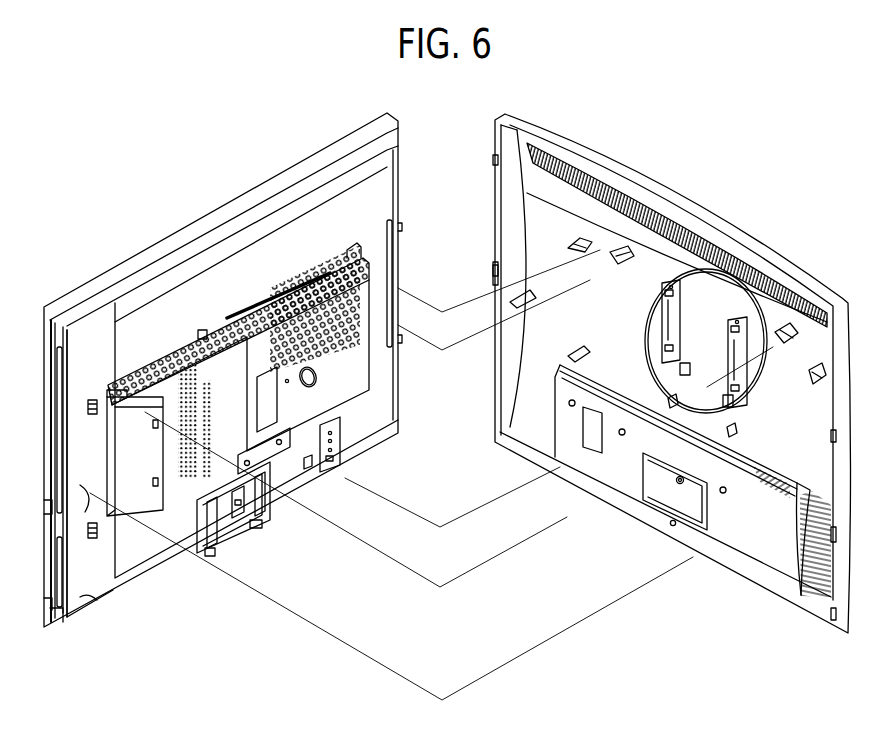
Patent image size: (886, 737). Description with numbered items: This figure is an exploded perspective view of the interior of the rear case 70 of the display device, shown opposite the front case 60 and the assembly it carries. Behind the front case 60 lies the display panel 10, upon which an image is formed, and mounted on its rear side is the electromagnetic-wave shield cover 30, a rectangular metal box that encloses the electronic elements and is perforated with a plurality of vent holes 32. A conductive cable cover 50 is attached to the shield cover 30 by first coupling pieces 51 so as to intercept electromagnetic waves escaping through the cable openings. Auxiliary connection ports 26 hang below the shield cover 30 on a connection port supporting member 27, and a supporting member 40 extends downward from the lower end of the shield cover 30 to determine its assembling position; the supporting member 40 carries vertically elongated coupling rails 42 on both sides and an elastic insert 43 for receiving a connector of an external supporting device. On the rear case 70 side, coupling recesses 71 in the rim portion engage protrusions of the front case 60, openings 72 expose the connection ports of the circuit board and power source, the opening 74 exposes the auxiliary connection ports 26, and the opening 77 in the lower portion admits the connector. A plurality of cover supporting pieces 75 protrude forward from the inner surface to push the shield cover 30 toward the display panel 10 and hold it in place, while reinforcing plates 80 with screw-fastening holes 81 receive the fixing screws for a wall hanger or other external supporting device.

The display panel 10 is at (390, 179).
The auxiliary connection ports 26 is at (340, 450).
The connection port supporting member 27 is at (308, 463).
The electromagnetic-wave shield cover 30 is at (358, 364).
The vent holes 32 is at (368, 293).
The supporting member 40 is at (203, 554).
The coupling rails 42 is at (218, 530).
The elastic insert 43 is at (243, 520).
The cable cover 50 is at (82, 452).
The first coupling pieces 51 is at (93, 540).
The front case 60 is at (333, 141).
The rear case 70 is at (630, 172).
The coupling recesses 71 is at (497, 263).
The openings 72 is at (615, 403).
The opening 74 is at (558, 450).
The cover supporting pieces 75 is at (625, 254).
The opening 77 is at (667, 507).
The reinforcing plates 80 is at (740, 318).
The screw-fastening holes 81 is at (684, 364).